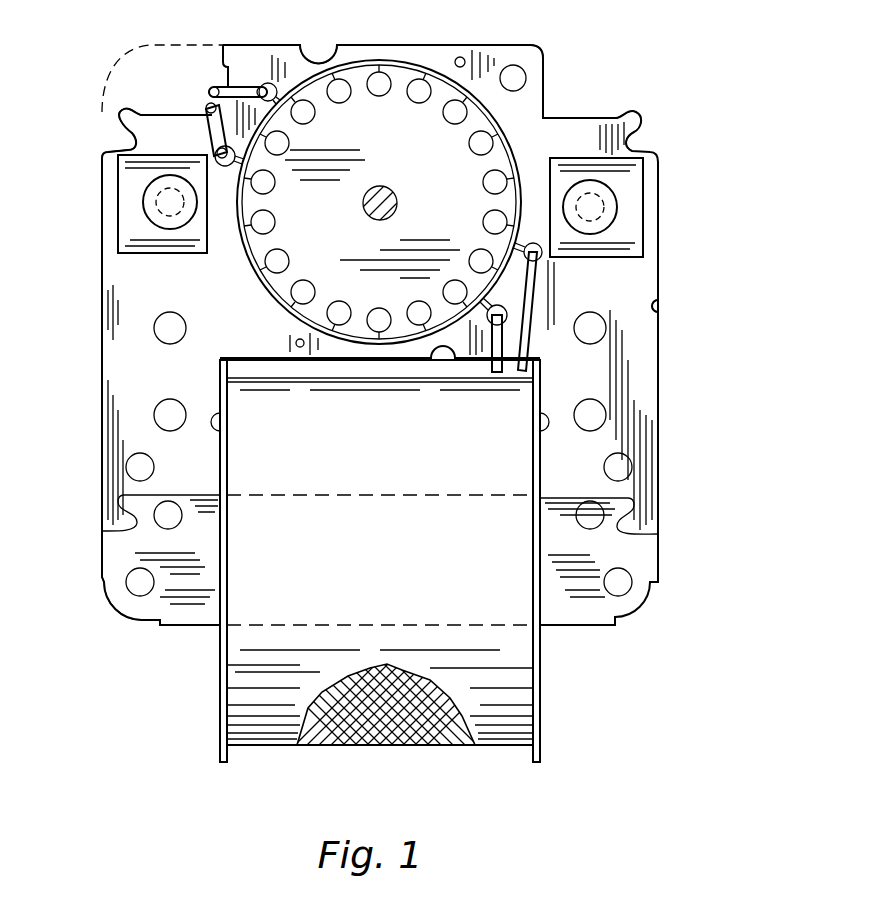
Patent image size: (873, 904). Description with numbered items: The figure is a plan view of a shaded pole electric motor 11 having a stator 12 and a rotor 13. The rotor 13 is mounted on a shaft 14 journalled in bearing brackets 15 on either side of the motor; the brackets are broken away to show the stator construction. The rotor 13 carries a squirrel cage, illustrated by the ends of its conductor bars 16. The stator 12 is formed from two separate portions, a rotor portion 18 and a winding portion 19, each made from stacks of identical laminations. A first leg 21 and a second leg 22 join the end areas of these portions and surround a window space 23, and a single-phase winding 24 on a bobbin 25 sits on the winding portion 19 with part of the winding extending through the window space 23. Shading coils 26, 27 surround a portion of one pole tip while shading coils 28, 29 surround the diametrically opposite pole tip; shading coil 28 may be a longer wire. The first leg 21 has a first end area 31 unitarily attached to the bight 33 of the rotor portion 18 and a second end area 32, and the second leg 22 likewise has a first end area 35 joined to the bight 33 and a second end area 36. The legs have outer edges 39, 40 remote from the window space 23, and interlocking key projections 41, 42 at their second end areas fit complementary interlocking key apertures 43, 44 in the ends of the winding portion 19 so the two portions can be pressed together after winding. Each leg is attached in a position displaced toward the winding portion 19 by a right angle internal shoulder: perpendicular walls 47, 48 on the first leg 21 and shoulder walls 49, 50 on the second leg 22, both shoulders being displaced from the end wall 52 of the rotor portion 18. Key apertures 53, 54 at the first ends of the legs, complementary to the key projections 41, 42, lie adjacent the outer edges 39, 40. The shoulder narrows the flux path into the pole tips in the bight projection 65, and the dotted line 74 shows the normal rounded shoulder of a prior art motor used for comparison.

The electric motor 11 is at (635, 106).
The stator 12 is at (110, 347).
The rotor 13 is at (403, 72).
The shaft 14 is at (397, 195).
The bearing brackets 15 is at (132, 248).
The conductor bars 16 is at (466, 113).
The rotor portion 18 is at (637, 340).
The winding portion 19 is at (173, 618).
The first leg 21 is at (110, 414).
The second leg 22 is at (651, 389).
The window space 23 is at (268, 368).
The single-phase winding 24 is at (368, 745).
The bobbin 25 is at (542, 713).
The shading coil 26 is at (209, 133).
The shading coil 27 is at (238, 87).
The shading coil 28 is at (519, 374).
The shading coil 29 is at (487, 368).
The first end area 31 is at (132, 117).
The second end area 32 is at (205, 478).
The bight 33 is at (300, 348).
The first end area 35 is at (580, 135).
The second end area 36 is at (563, 496).
The outer edge 39 is at (106, 460).
The outer edge 40 is at (661, 437).
The interlocking key projection 41 is at (114, 514).
The interlocking key projection 42 is at (645, 517).
The interlocking key aperture 43 is at (113, 533).
The interlocking key aperture 44 is at (637, 535).
The shoulder wall 47 is at (222, 67).
The shoulder wall 48 is at (157, 127).
The shoulder wall 49 is at (545, 72).
The shoulder wall 50 is at (588, 134).
The end wall 52 is at (364, 47).
The key aperture 53 is at (118, 132).
The key aperture 54 is at (633, 134).
The bight projection 65 is at (475, 47).
The dotted line 74 is at (137, 55).